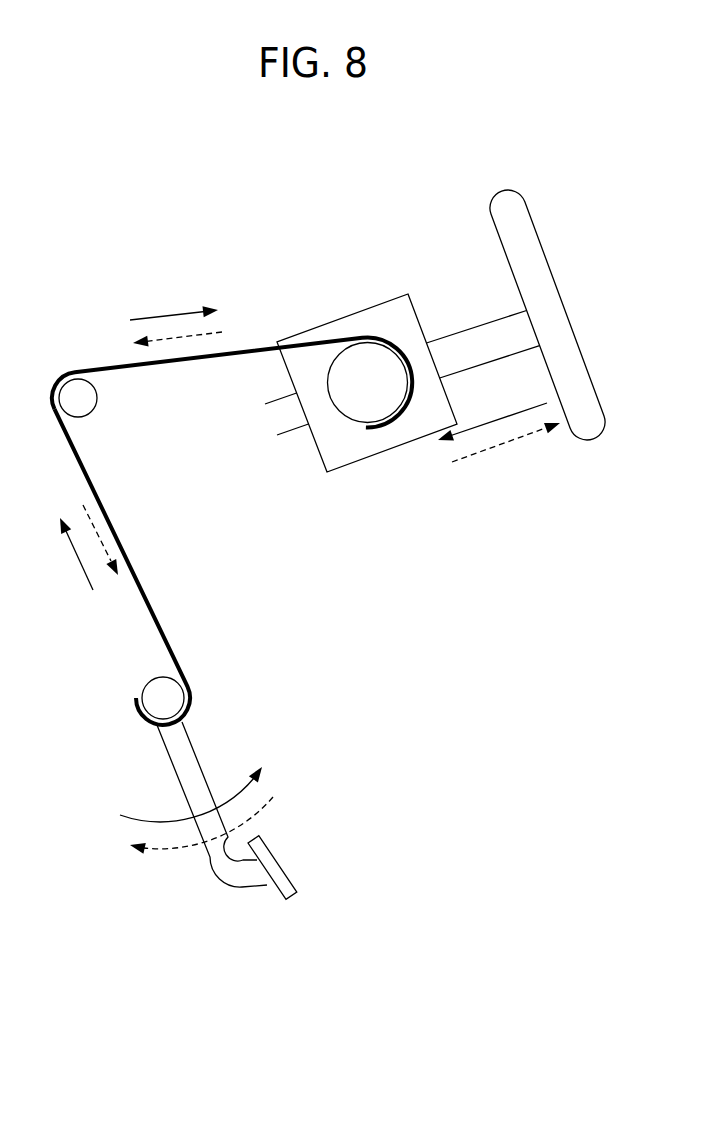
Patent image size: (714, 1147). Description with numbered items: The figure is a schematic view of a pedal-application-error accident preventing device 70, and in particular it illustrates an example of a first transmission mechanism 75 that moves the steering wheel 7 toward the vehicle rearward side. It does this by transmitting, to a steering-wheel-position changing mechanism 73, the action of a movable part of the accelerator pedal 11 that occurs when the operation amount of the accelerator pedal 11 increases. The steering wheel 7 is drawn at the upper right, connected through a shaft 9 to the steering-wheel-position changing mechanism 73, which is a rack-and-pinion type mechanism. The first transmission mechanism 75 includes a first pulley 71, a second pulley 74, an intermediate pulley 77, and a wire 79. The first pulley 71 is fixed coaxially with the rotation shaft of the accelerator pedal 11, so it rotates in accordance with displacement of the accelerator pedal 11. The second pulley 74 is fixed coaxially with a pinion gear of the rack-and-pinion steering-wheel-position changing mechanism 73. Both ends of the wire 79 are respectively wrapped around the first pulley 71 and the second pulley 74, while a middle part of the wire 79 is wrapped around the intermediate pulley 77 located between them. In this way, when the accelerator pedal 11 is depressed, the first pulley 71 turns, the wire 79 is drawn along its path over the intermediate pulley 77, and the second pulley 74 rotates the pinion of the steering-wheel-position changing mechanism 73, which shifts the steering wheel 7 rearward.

The steering wheel 7 is at (516, 204).
The steering shaft 9 is at (482, 342).
The accelerator pedal 11 is at (248, 873).
The pedal-application-error accident preventing device 70 is at (578, 685).
The first pulley 71 is at (158, 687).
The steering-wheel-position changing mechanism 73 is at (349, 305).
The second pulley 74 is at (353, 402).
The first transmission mechanism 75 is at (67, 356).
The intermediate pulley 77 is at (85, 398).
The wire 79 is at (112, 532).